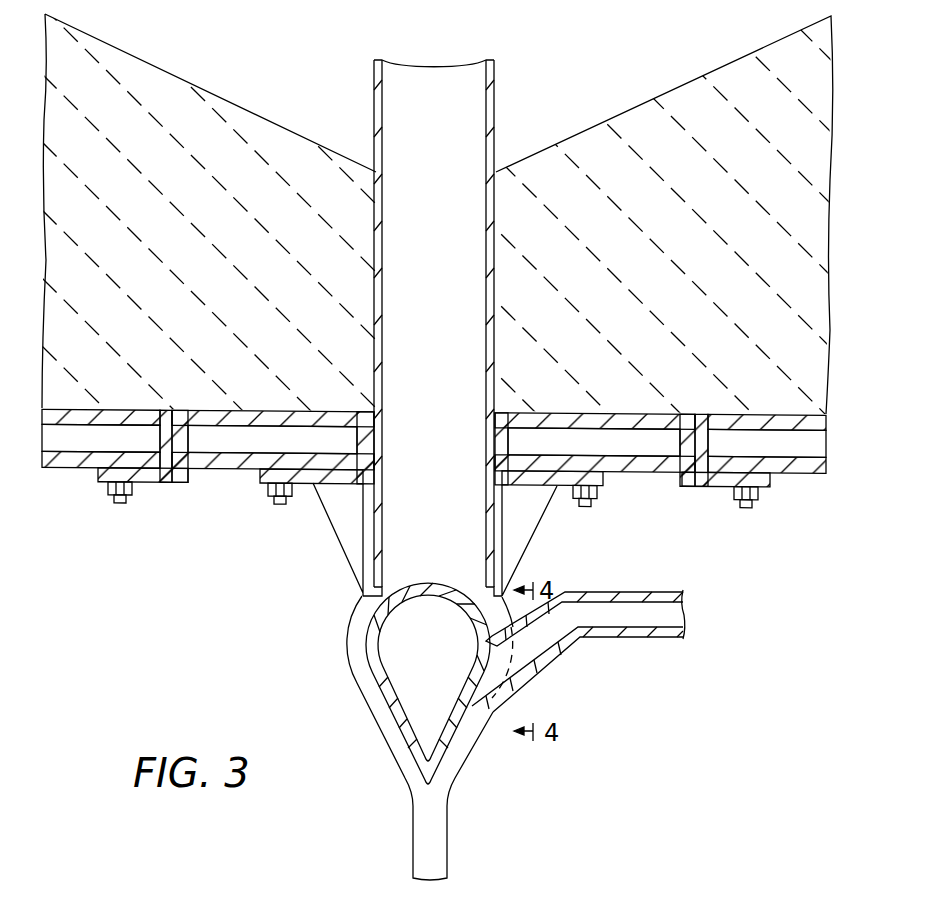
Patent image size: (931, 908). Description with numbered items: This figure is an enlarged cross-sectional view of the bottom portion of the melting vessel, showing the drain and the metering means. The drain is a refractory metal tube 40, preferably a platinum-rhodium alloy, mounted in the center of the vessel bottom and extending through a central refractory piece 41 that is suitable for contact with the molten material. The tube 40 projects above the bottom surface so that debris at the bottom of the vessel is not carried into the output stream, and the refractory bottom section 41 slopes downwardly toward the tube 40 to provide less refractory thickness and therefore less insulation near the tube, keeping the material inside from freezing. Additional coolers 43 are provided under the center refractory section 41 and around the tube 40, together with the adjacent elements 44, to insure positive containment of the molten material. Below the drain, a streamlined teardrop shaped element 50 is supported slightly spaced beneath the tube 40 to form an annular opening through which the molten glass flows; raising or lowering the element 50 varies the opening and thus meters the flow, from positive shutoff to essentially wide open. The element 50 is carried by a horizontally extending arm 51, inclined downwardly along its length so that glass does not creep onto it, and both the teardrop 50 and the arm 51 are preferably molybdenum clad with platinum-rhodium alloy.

The tube 40 is at (495, 103).
The central refractory piece 41 is at (681, 88).
The cooler 43 is at (243, 470).
The outer panel 44 is at (84, 468).
The teardrop shaped element 50 is at (367, 640).
The horizontally extending arm 51 is at (596, 591).